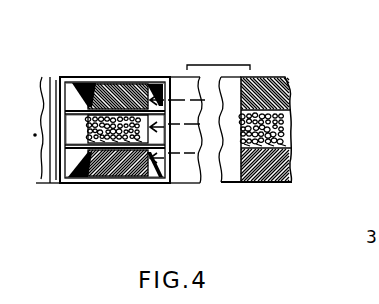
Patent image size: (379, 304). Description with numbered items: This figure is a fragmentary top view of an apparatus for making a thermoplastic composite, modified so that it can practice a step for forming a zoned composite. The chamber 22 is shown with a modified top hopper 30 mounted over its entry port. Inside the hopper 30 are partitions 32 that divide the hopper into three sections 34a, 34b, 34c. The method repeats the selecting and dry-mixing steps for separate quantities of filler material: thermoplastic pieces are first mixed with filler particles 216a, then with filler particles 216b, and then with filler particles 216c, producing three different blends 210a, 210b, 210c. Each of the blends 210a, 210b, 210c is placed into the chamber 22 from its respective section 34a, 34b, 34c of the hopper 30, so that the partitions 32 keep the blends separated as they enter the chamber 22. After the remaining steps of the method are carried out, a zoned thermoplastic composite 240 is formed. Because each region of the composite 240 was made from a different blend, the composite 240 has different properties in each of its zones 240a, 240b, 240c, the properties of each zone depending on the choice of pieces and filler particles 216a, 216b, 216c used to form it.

The chamber 22 is at (238, 189).
The top hopper 30 is at (80, 187).
The partitions 32 is at (88, 76).
The hopper section 34a is at (165, 99).
The hopper section 34b is at (170, 126).
The hopper section 34c is at (170, 158).
The blend 210a is at (103, 94).
The blend 210b is at (100, 114).
The blend 210c is at (100, 165).
The filler particles 216a is at (152, 83).
The filler particles 216b is at (118, 118).
The filler particles 216c is at (137, 170).
The zoned thermoplastic composite 240 is at (283, 74).
The zone 240a is at (290, 87).
The zone 240b is at (292, 125).
The zone 240c is at (292, 163).